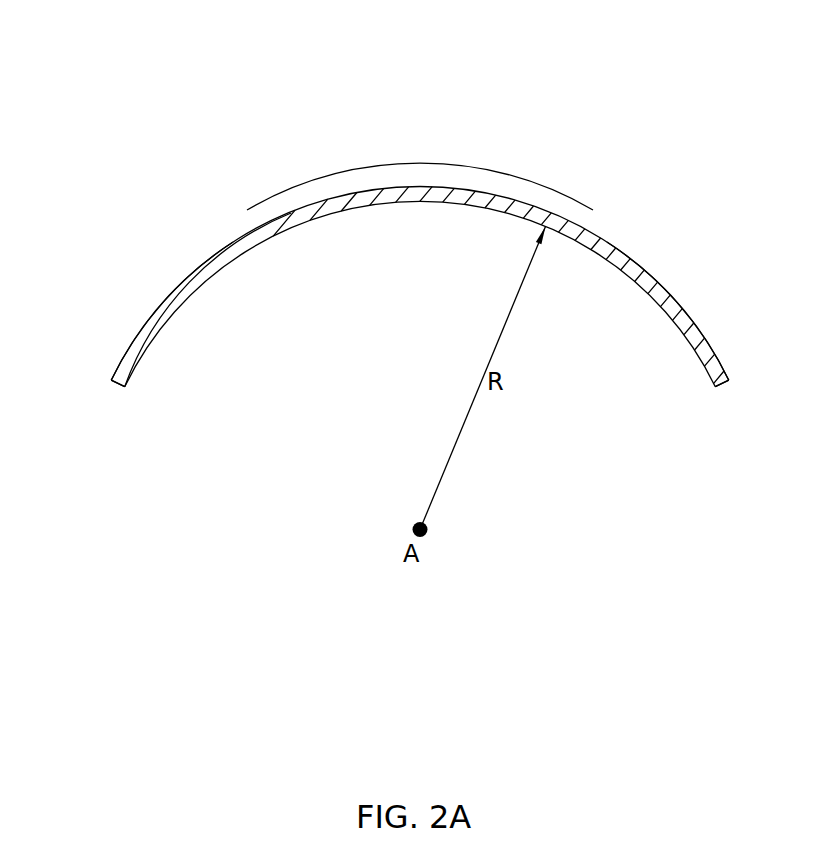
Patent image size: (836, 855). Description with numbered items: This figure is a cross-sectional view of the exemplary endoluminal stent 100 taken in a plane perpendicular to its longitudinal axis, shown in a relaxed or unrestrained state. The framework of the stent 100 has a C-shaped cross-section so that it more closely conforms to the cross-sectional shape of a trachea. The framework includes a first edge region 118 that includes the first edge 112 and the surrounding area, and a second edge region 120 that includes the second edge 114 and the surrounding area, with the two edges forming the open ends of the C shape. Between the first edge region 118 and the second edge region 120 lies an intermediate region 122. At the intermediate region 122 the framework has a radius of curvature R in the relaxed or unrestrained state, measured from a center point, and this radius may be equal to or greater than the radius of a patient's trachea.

The curved band member 100 is at (207, 90).
The first edge 112 is at (113, 386).
The second edge 114 is at (721, 388).
The first edge region 118 is at (214, 212).
The second edge region 120 is at (626, 212).
The intermediate region 122 is at (592, 192).